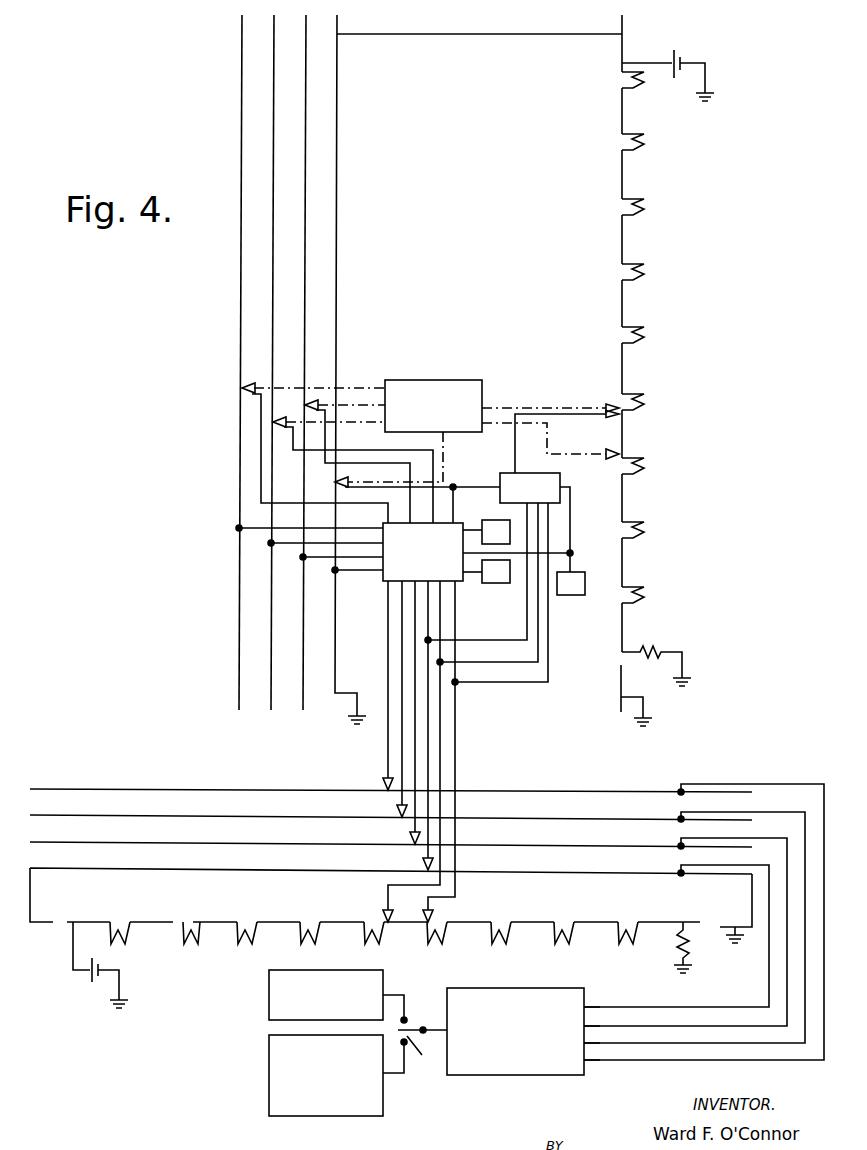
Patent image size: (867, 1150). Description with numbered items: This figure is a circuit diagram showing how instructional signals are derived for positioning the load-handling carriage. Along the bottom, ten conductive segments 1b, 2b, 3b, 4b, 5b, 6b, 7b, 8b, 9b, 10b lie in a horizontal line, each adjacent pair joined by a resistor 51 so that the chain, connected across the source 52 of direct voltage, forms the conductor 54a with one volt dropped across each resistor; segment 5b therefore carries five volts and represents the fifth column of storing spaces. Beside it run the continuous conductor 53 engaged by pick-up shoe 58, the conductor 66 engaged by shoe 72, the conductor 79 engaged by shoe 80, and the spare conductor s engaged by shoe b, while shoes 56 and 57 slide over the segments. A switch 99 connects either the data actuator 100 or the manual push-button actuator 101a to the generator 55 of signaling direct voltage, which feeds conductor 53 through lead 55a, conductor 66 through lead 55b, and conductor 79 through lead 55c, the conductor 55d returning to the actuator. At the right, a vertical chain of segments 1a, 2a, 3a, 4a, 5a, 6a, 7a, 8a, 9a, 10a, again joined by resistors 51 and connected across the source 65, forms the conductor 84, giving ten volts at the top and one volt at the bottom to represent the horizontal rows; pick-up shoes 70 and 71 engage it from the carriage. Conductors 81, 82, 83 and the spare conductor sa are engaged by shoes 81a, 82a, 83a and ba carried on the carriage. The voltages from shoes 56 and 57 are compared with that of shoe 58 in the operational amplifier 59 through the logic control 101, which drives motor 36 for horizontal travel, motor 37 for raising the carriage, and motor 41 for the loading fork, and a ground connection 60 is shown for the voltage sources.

The source of direct voltage 65 is at (678, 53).
The conductor 84 is at (445, 503).
The resistor 51 is at (648, 338).
The conductive segment 10a is at (644, 42).
The conductive segment 9a is at (646, 111).
The conductive segment 8a is at (646, 175).
The conductive segment 7a is at (646, 238).
The conductive segment 6a is at (646, 303).
The conductive segment 5a is at (646, 368).
The conductive segment 4a is at (646, 433).
The conductive segment 3a is at (646, 497).
The conductive segment 2a is at (646, 562).
The conductive segment 1a is at (648, 627).
The spare electric conductor sa is at (340, 199).
The electric conductor 81 is at (240, 346).
The electric conductor 82 is at (273, 313).
The electric conductor 83 is at (305, 283).
The electric pick-up shoe 81a is at (245, 393).
The electric pick-up shoe 82a is at (278, 425).
The electric pick-up shoe 83a is at (310, 402).
The spare electric pick-up shoe ba is at (340, 482).
The electric pick-up shoe 71 is at (616, 405).
The electric pick-up shoe 70 is at (618, 460).
The operational amplifier 59 is at (503, 473).
The motor 36 is at (493, 520).
The motor 41 is at (497, 583).
The motor 37 is at (571, 595).
The logic control 101 is at (383, 581).
The ground connection 60 is at (618, 674).
The spare continuous conductor s is at (251, 789).
The pick-up shoe b is at (381, 787).
The electric conductor 79 is at (151, 816).
The pick-up shoe 80 is at (396, 814).
The electric conductor 66 is at (196, 843).
The electric shoe 72 is at (408, 841).
The electric conductor 53 is at (241, 869).
The pick-up shoe 58 is at (422, 867).
The electric pick-up shoe 56 is at (383, 919).
The electric pick-up shoe 57 is at (432, 919).
The source of direct voltage 52 is at (91, 976).
The conductive segment 10b is at (105, 937).
The conductive segment 9b is at (201, 937).
The conductive segment 8b is at (264, 937).
The conductive segment 7b is at (327, 937).
The conductive segment 6b is at (390, 937).
The conductive segment 5b is at (454, 937).
The conductive segment 4b is at (517, 937).
The conductive segment 3b is at (581, 937).
The conductive segment 2b is at (596, 942).
The conductive segment 1b is at (673, 947).
The data actuator 100 is at (269, 999).
The manual actuator push button switches 101a is at (269, 1068).
The switch 99 is at (422, 1047).
The conductor 54a is at (500, 981).
The generator of signaling direct voltage 55 is at (492, 1075).
The lead 55a is at (660, 1007).
The lead 55b is at (707, 1026).
The lead 55c is at (637, 1044).
The conductor 55d is at (692, 1061).